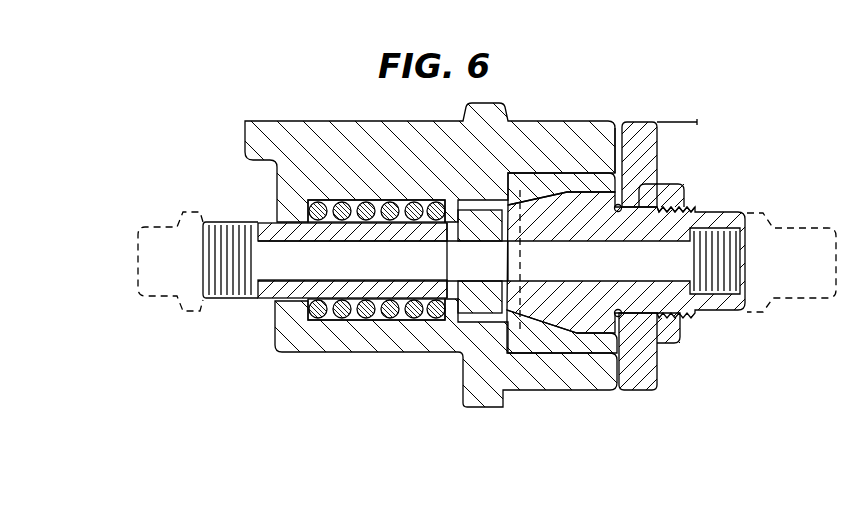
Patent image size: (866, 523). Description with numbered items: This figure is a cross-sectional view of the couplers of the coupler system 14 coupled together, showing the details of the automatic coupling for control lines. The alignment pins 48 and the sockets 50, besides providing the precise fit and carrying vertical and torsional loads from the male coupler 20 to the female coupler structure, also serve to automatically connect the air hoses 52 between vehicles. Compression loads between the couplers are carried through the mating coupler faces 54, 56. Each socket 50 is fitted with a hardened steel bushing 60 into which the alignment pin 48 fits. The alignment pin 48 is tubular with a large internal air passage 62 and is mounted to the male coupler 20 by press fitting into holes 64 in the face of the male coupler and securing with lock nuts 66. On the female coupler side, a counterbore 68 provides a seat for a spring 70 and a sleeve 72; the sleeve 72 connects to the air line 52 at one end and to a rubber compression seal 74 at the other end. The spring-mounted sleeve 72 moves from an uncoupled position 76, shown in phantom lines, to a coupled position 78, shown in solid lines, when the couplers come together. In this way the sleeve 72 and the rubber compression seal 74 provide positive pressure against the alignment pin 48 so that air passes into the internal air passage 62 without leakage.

The coupler system 14 is at (616, 119).
The male coupler 20 is at (683, 121).
The alignment pins 48 is at (572, 231).
The sockets 50 is at (578, 342).
The air hoses 52 is at (163, 275).
The mating coupler face 54 is at (624, 146).
The mating coupler face 56 is at (613, 147).
The hardened steel bushing 60 is at (502, 315).
The internal air passage 62 is at (637, 278).
The holes 64 is at (661, 184).
The lock nuts 66 is at (683, 198).
The counterbore 68 is at (319, 202).
The spring 70 is at (381, 218).
The sleeve 72 is at (246, 221).
The rubber compression seal 74 is at (468, 292).
The uncoupled position 76 is at (521, 268).
The coupled position 78 is at (463, 355).